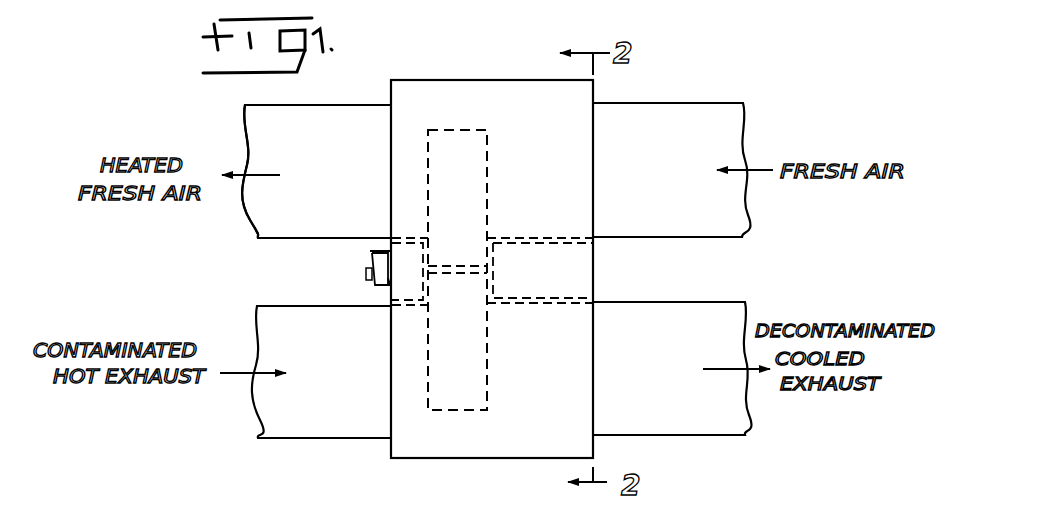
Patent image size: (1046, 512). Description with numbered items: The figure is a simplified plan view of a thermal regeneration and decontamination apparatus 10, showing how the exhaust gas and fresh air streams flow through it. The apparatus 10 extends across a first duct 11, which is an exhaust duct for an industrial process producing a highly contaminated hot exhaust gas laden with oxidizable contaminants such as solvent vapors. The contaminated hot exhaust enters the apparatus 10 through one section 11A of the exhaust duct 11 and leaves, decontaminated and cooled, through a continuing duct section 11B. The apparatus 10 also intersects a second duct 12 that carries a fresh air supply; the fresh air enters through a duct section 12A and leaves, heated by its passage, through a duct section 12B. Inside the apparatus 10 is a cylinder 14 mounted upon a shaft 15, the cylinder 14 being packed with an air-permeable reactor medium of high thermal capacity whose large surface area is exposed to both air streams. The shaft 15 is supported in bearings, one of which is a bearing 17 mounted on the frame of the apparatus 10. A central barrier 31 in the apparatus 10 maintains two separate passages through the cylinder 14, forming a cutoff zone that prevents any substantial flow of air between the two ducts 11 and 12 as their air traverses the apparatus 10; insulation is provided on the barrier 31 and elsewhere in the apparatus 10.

The thermal regeneration and decontamination apparatus 10 is at (480, 75).
The first duct 11 is at (357, 448).
The exhaust duct section 11A is at (272, 415).
The continuing duct section 11B is at (707, 422).
The second duct 12 is at (372, 100).
The fresh air duct section 12A is at (693, 105).
The fresh air duct section 12B is at (280, 208).
The cylinder 14 is at (487, 160).
The shaft 15 is at (366, 272).
The bearing 17 is at (377, 286).
The central barrier 31 is at (460, 266).